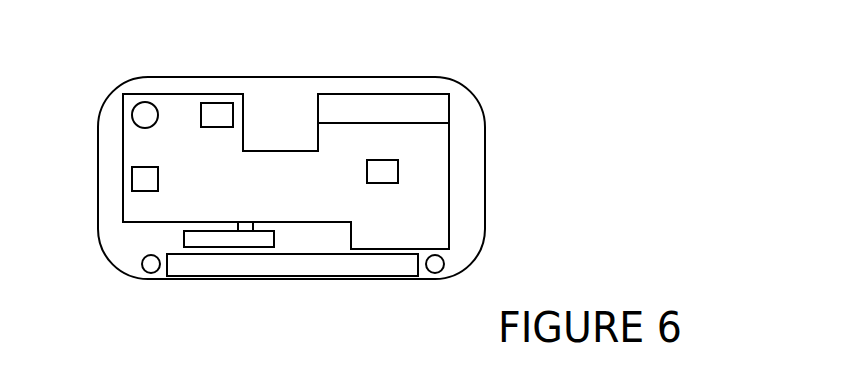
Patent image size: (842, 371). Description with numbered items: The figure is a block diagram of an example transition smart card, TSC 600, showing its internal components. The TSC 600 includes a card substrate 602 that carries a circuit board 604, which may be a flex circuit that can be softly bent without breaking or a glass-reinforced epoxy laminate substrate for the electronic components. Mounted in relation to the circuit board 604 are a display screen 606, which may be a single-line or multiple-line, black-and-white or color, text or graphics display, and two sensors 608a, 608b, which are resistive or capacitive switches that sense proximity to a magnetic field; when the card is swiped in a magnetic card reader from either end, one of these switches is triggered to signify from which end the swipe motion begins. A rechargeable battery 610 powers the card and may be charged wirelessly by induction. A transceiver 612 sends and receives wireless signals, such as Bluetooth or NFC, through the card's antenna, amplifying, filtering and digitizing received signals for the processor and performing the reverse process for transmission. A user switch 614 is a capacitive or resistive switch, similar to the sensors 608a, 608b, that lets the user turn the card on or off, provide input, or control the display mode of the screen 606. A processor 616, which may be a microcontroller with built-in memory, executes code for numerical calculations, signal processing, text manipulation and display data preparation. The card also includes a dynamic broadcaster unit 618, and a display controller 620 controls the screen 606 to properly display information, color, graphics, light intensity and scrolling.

The transition smart card 600 is at (496, 41).
The card substrate 602 is at (338, 77).
The circuit board 604 is at (437, 208).
The display screen 606 is at (449, 110).
The sensor 608a is at (142, 262).
The sensor 608b is at (444, 262).
The rechargeable battery 610 is at (184, 238).
The transceiver 612 is at (128, 177).
The user switch 614 is at (128, 115).
The processor 616 is at (216, 103).
The dynamic broadcaster unit 618 is at (248, 276).
The display controller 620 is at (398, 173).